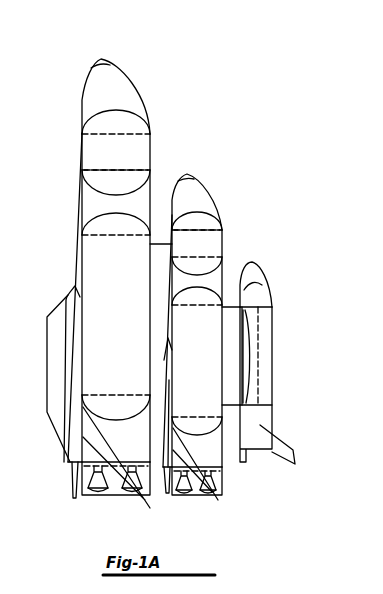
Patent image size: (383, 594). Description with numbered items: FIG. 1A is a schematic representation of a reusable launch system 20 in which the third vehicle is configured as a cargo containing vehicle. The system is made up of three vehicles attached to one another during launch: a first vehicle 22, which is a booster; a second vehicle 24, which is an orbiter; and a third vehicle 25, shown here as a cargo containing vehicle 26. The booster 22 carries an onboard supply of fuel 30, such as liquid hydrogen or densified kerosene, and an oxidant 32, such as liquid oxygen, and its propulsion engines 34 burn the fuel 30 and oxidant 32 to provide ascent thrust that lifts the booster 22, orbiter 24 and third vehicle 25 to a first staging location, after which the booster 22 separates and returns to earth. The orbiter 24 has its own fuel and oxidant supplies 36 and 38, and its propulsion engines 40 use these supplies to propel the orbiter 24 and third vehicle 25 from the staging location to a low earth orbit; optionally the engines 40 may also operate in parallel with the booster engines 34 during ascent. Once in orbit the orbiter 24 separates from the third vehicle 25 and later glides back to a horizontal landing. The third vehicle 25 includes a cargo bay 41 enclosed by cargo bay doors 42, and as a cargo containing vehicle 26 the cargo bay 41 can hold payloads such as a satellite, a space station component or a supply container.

The reusable launch system 20 is at (252, 160).
The first vehicle (booster) 22 is at (96, 85).
The second vehicle (orbiter) 24 is at (193, 190).
The third vehicle 25 is at (260, 273).
The cargo containing vehicle 26 is at (260, 287).
The fuel 30 is at (95, 274).
The oxidant 32 is at (108, 151).
The propulsion engines 34 is at (122, 480).
The fuel supply 36 is at (203, 380).
The oxidant supply 38 is at (200, 217).
The propulsion engines 40 is at (187, 480).
The cargo bay 41 is at (268, 325).
The cargo bay doors 42 is at (267, 350).